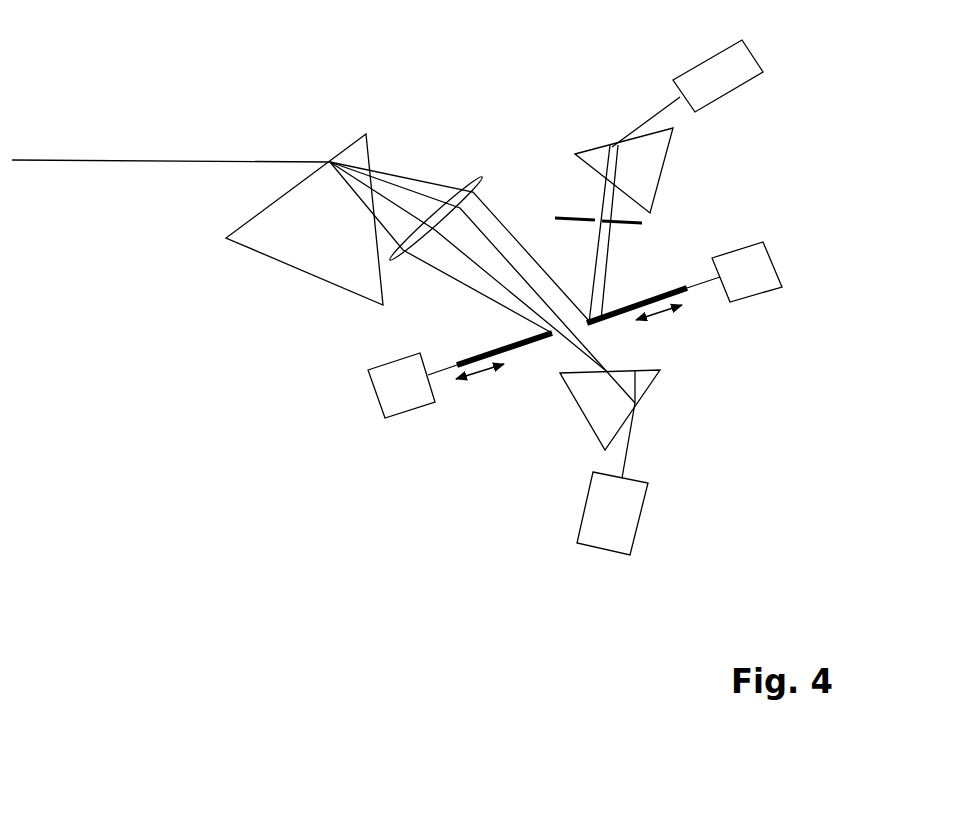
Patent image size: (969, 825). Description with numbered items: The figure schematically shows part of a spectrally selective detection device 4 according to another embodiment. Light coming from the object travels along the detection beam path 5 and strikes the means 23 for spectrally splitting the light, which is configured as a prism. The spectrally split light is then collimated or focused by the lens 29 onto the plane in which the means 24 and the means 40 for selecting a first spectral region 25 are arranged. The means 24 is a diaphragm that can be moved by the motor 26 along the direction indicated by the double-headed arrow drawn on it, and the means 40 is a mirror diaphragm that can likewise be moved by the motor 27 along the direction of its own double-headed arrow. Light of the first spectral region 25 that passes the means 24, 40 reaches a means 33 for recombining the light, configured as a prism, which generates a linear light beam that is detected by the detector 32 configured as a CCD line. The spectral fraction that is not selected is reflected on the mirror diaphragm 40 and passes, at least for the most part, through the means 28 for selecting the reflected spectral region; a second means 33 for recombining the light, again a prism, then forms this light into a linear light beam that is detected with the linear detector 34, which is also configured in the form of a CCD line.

The spectrally selective detection device 4 is at (820, 164).
The detection beam path 5 is at (130, 160).
The means for spectrally splitting the light 23 is at (346, 233).
The means for selecting a first spectral region 24 is at (517, 353).
The first spectral region 25 is at (573, 328).
The motor 26 is at (403, 402).
The motor 27 is at (757, 277).
The means for selecting the reflected spectral region 28 is at (580, 217).
The lens 29 is at (480, 176).
The detector 32 is at (622, 528).
The means for recombining the light 33 is at (630, 170).
The linear detector 34 is at (707, 67).
The mirror diaphragm 40 is at (652, 296).